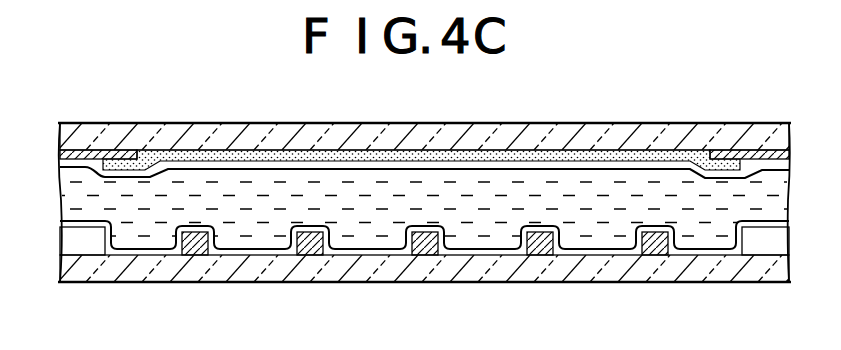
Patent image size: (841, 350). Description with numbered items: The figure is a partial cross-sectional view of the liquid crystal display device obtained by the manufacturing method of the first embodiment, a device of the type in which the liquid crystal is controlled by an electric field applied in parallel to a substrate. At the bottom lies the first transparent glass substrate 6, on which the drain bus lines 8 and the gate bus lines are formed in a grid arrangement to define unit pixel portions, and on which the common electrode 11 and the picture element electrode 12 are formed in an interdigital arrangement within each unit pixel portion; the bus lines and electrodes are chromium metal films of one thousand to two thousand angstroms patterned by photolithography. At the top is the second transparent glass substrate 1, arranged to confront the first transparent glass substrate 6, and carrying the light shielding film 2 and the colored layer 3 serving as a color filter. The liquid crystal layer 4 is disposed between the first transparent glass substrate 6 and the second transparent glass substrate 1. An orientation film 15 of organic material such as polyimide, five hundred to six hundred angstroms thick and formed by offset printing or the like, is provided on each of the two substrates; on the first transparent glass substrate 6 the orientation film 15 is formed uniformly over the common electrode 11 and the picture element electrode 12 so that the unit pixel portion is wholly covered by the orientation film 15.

The second transparent glass substrate 1 is at (608, 138).
The light shielding film 2 is at (119, 152).
The colored layer 3 is at (472, 165).
The liquid crystal layer 4 is at (293, 198).
The first transparent glass substrate 6 is at (605, 277).
The drain bus line 8 is at (83, 245).
The common electrode 11 is at (197, 246).
The picture element electrode 12 is at (312, 246).
The orientation film 15 is at (370, 162).